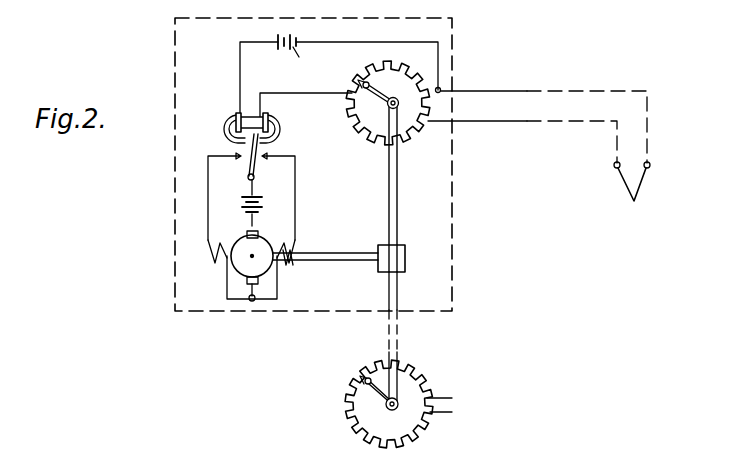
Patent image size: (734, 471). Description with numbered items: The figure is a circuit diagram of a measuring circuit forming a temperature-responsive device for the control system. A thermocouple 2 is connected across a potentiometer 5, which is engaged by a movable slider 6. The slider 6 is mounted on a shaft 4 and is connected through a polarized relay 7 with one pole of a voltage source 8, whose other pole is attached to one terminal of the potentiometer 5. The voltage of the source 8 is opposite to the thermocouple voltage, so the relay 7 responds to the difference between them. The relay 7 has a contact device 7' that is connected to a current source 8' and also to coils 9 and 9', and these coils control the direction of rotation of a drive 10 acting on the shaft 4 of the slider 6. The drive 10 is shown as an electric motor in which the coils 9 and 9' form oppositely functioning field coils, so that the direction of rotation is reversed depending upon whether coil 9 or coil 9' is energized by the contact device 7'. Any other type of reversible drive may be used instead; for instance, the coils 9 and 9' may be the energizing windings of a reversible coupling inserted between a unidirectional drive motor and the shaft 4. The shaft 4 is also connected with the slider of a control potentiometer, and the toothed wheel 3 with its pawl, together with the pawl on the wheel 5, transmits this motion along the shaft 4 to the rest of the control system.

The thermocouple 2 is at (643, 178).
The ratchet wheel 3 is at (345, 398).
The shaft 4 is at (397, 190).
The potentiometer 5 is at (366, 136).
The movable slider 6 is at (372, 83).
The polarized relay 7 is at (260, 128).
The contact device 7' is at (239, 157).
The voltage source 8 is at (293, 56).
The current source 8' is at (282, 203).
The coil 9 is at (211, 264).
The coil 9' is at (297, 266).
The drive 10 is at (262, 246).